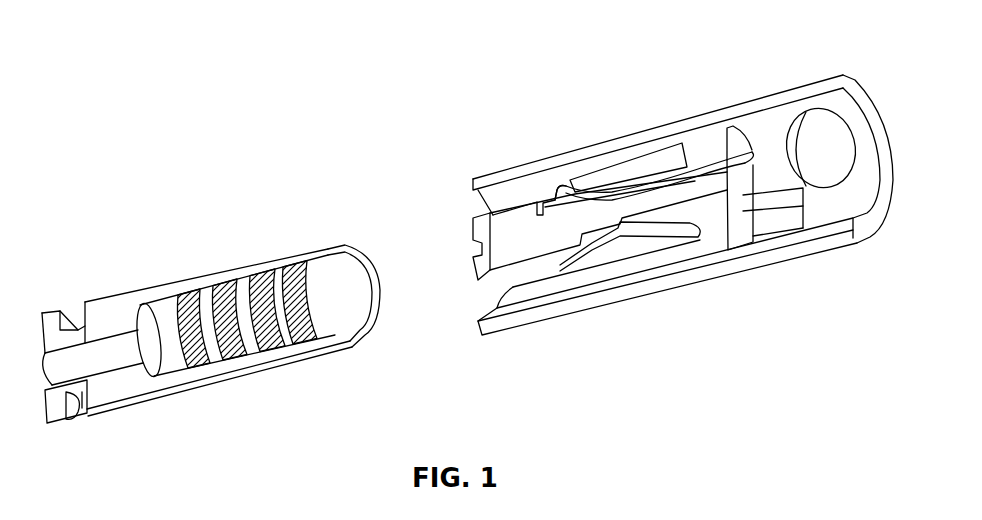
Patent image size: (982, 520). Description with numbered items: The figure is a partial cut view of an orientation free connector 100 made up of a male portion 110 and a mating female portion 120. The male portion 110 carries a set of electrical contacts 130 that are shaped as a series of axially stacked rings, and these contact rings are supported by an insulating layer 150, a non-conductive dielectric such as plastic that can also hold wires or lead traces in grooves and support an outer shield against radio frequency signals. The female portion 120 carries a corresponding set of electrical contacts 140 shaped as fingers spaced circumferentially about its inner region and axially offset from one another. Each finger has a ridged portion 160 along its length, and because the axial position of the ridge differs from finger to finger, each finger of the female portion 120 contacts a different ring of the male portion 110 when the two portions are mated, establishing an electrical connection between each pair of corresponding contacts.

The orientation free connector 100 is at (220, 69).
The male portion 110 is at (128, 234).
The female portion 120 is at (660, 93).
The electrical contacts 130 is at (200, 367).
The electrical contacts 140 is at (737, 137).
The insulating layer 150 is at (205, 302).
The ridged portion 160 is at (558, 180).